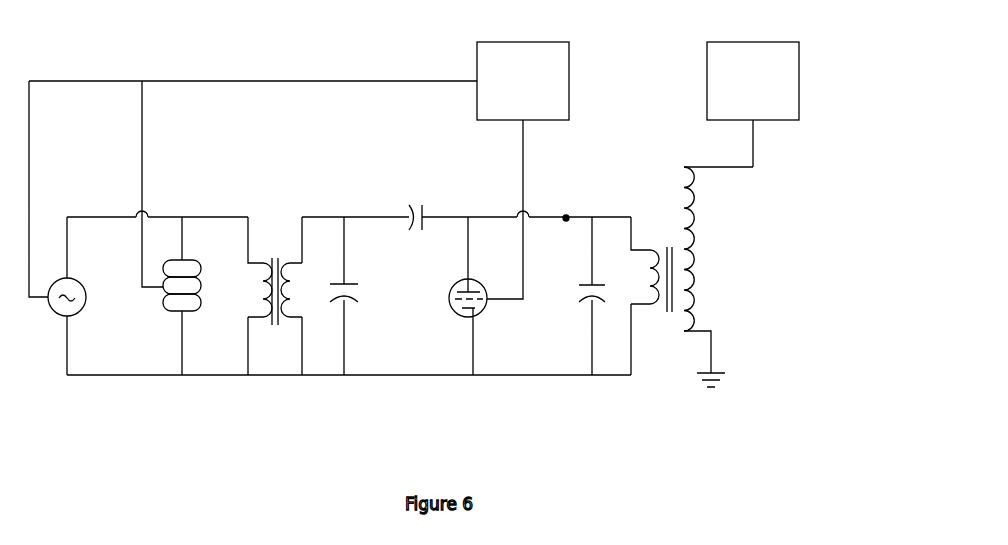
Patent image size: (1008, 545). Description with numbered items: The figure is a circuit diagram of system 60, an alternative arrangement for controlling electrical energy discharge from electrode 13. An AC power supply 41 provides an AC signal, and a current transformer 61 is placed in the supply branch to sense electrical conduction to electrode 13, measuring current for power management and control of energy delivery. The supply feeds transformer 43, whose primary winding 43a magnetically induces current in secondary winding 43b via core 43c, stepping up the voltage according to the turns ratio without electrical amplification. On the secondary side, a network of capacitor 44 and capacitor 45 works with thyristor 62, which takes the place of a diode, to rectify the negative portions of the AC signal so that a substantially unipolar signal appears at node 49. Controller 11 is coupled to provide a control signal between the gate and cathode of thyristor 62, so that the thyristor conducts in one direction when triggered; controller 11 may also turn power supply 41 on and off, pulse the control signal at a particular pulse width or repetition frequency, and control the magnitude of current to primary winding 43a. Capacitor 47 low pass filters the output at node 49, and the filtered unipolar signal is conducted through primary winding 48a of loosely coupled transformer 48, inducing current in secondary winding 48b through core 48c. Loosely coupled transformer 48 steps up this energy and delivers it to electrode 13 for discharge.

The system 60 is at (843, 50).
The controller 11 is at (523, 81).
The electrode 13 is at (753, 81).
The AC power supply 41 is at (89, 298).
The current transformer 61 is at (193, 257).
The transformer 43 is at (270, 294).
The primary winding 43a is at (257, 290).
The secondary winding 43b is at (291, 291).
The core 43c is at (275, 332).
The capacitor 44 is at (362, 287).
The capacitor 45 is at (425, 208).
The thyristor 62 is at (451, 311).
The node 49 is at (567, 212).
The capacitor 47 is at (604, 283).
The loosely coupled transformer 48 is at (675, 288).
The primary winding 48a is at (658, 307).
The secondary winding 48b is at (697, 248).
The core 48c is at (670, 318).